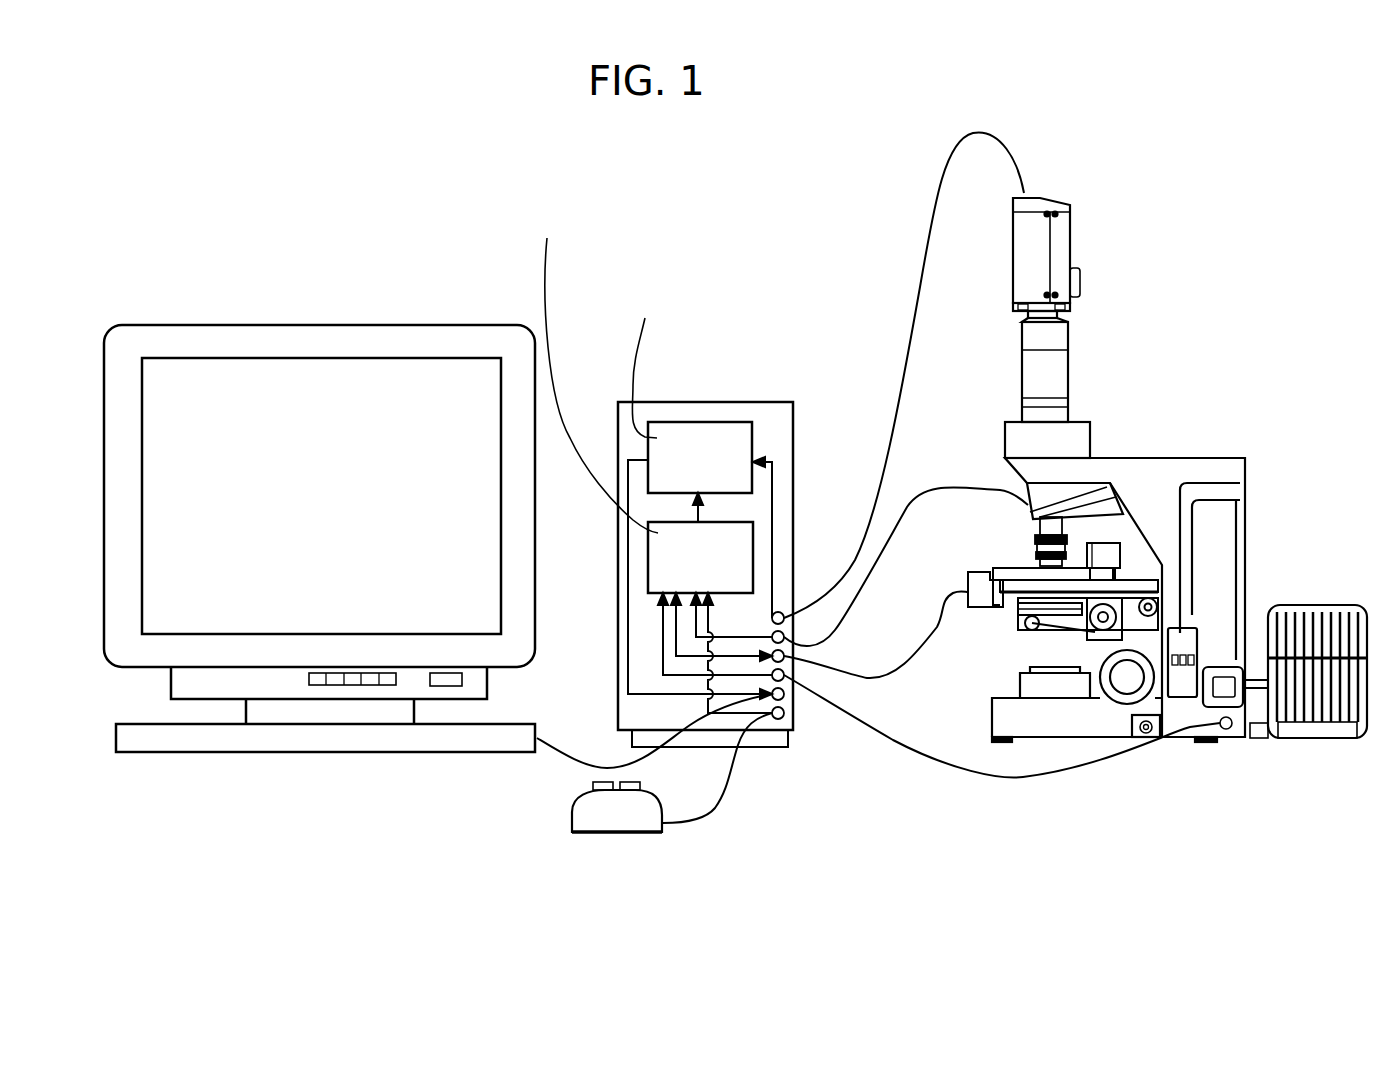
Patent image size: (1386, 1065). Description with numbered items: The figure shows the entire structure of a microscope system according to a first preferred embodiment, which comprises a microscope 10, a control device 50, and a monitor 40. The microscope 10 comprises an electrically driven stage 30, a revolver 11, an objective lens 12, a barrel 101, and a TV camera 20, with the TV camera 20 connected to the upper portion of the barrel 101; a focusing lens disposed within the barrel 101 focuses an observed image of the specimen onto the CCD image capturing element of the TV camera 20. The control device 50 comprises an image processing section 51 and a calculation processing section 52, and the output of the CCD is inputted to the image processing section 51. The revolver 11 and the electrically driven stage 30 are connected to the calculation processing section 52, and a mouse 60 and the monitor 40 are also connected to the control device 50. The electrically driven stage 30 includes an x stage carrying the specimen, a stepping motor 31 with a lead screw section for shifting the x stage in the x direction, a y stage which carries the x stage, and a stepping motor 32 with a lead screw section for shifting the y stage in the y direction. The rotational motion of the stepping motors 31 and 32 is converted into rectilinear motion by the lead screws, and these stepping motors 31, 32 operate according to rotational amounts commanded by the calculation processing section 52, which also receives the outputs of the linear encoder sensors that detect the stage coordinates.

The microscope 10 is at (1188, 322).
The revolver 11 is at (1028, 492).
The objective lens 12 is at (1040, 528).
The TV camera 20 is at (1067, 230).
The electrically driven stage 30 is at (975, 556).
The stepping motor 31 is at (1103, 545).
The stepping motor 32 is at (976, 608).
The monitor 40 is at (461, 337).
The control device 50 is at (776, 406).
The image processing section 51 is at (669, 423).
The calculation processing section 52 is at (750, 530).
The mouse 60 is at (640, 817).
The barrel 101 is at (1068, 371).